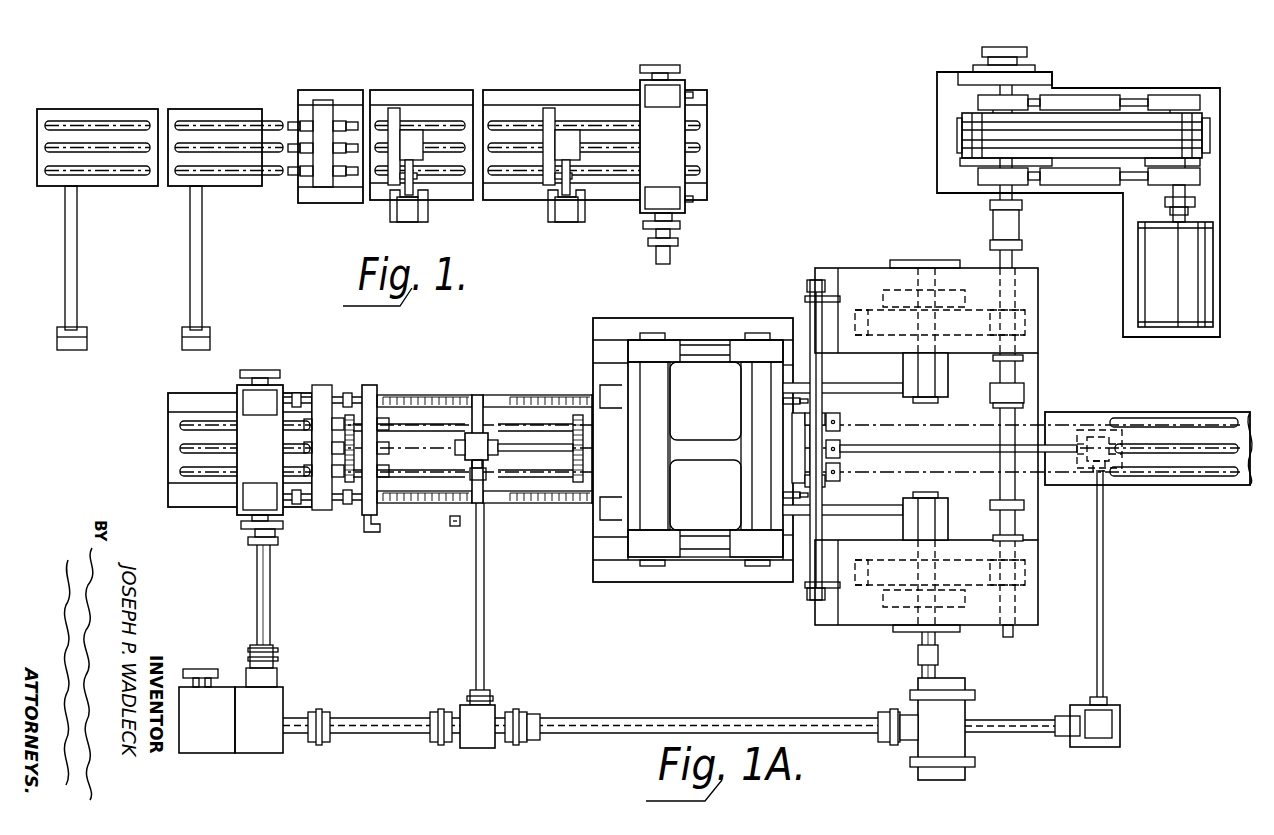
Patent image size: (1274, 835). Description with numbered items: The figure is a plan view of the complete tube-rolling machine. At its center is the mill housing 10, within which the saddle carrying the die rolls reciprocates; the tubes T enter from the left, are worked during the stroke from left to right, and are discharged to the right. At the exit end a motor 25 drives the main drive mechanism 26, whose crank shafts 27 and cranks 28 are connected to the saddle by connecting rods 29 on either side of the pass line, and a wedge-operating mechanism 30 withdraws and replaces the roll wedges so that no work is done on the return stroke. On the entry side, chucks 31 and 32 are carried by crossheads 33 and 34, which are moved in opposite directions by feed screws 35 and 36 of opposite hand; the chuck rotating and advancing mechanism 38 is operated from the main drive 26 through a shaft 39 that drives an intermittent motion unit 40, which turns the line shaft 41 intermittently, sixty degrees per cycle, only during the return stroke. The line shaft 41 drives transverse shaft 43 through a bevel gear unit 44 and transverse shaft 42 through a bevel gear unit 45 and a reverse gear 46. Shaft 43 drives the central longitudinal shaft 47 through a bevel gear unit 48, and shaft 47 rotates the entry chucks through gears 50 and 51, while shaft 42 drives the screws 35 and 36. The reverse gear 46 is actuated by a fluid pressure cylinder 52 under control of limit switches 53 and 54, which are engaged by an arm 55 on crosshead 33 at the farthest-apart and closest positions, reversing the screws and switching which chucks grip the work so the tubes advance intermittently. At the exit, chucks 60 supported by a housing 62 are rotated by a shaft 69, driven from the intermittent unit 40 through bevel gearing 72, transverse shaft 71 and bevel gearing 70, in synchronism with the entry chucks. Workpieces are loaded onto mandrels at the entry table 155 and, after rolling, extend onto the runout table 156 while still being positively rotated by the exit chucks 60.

In FIG. 1A, the mill housing 10 is at (699, 336).
In FIG. 1A, the motor 25 is at (1150, 252).
In FIG. 1A, the main drive mechanism 26 is at (1045, 337).
In FIG. 1A, the crank shaft 27 is at (905, 282).
In FIG. 1A, the crank 28 is at (948, 377).
In FIG. 1A, the connecting rod 29 is at (843, 393).
In FIG. 1A, the wedge-operating mechanism 30 is at (814, 332).
In FIG. 1A, the chuck 31 is at (390, 452).
In FIG. 1A, the chuck 32 is at (575, 418).
In FIG. 1A, the crosshead 33 is at (368, 390).
In FIG. 1A, the crosshead 34 is at (602, 437).
In FIG. 1A, the feed screw 35 is at (528, 397).
In FIG. 1A, the feed screw 36 is at (418, 398).
In FIG. 1A, the chuck rotating and advancing mechanism 38 is at (866, 712).
In FIG. 1A, the shaft 39 is at (935, 675).
In FIG. 1A, the intermittent motion unit 40 is at (942, 729).
In FIG. 1A, the line shaft 41 is at (745, 718).
In FIG. 1, the transverse shaft 42 is at (672, 258).
In FIG. 1A, the transverse shaft 42 is at (270, 596).
In FIG. 1A, the transverse shaft 43 is at (476, 616).
In FIG. 1A, the bevel gear unit 44 is at (497, 706).
In FIG. 1A, the bevel gear unit 45 is at (259, 710).
In FIG. 1A, the reverse gear 46 is at (207, 720).
In FIG. 1A, the longitudinal shaft 47 is at (503, 455).
In FIG. 1A, the bevel gear unit 48 is at (478, 437).
In FIG. 1A, the gear 50 is at (340, 422).
In FIG. 1A, the gear 51 is at (577, 435).
In FIG. 1A, the fluid pressure cylinder 52 is at (200, 668).
In FIG. 1A, the limit switch 53 is at (362, 525).
In FIG. 1A, the limit switch 54 is at (455, 528).
In FIG. 1A, the arm 55 is at (376, 528).
In FIG. 1A, the exit chuck 60 is at (841, 421).
In FIG. 1A, the housing 62 is at (802, 452).
In FIG. 1A, the shaft 69 is at (928, 458).
In FIG. 1A, the bevel gearing 70 is at (1100, 440).
In FIG. 1A, the transverse shaft 71 is at (1104, 612).
In FIG. 1A, the bevel gearing 72 is at (1108, 725).
In FIG. 1, the entry table 155 is at (114, 106).
In FIG. 1A, the entry table 155 is at (212, 512).
In FIG. 1A, the runout table 156 is at (1190, 483).
In FIG. 1, the tube T is at (208, 167).
In FIG. 1A, the tube T is at (180, 427).